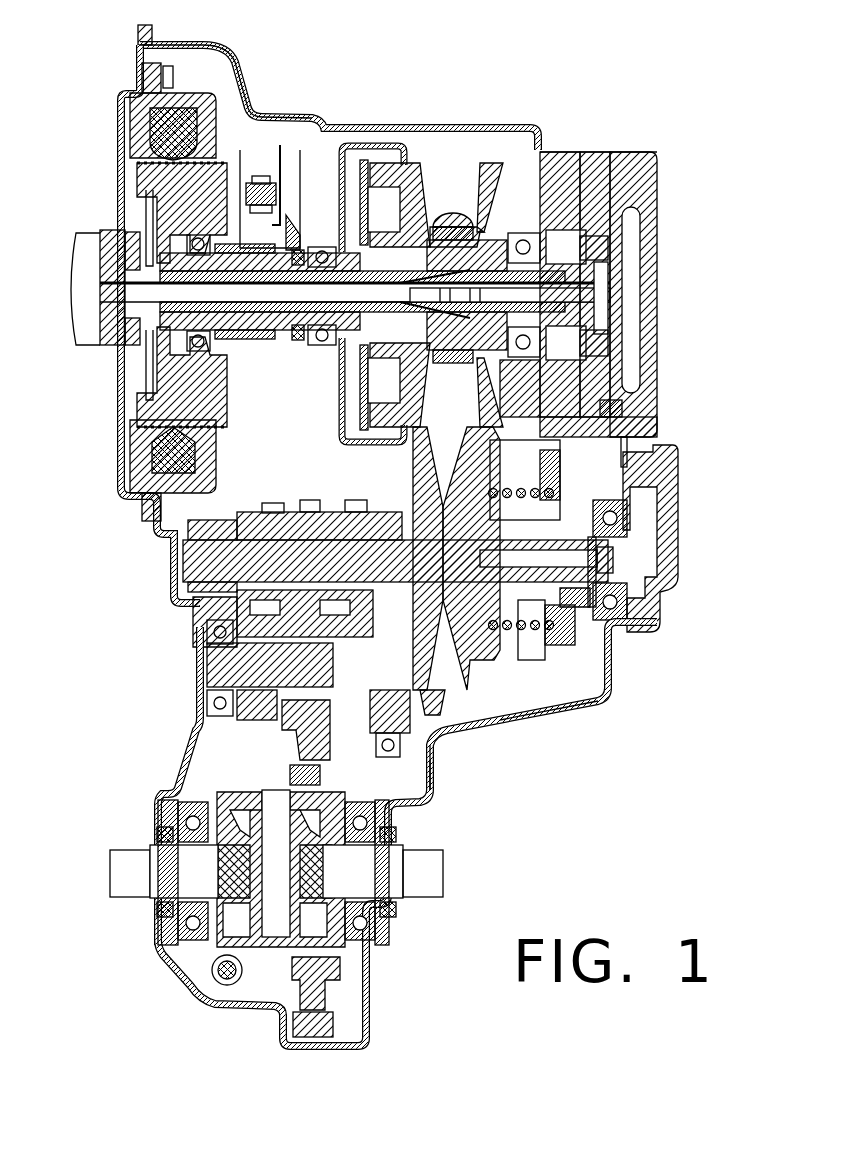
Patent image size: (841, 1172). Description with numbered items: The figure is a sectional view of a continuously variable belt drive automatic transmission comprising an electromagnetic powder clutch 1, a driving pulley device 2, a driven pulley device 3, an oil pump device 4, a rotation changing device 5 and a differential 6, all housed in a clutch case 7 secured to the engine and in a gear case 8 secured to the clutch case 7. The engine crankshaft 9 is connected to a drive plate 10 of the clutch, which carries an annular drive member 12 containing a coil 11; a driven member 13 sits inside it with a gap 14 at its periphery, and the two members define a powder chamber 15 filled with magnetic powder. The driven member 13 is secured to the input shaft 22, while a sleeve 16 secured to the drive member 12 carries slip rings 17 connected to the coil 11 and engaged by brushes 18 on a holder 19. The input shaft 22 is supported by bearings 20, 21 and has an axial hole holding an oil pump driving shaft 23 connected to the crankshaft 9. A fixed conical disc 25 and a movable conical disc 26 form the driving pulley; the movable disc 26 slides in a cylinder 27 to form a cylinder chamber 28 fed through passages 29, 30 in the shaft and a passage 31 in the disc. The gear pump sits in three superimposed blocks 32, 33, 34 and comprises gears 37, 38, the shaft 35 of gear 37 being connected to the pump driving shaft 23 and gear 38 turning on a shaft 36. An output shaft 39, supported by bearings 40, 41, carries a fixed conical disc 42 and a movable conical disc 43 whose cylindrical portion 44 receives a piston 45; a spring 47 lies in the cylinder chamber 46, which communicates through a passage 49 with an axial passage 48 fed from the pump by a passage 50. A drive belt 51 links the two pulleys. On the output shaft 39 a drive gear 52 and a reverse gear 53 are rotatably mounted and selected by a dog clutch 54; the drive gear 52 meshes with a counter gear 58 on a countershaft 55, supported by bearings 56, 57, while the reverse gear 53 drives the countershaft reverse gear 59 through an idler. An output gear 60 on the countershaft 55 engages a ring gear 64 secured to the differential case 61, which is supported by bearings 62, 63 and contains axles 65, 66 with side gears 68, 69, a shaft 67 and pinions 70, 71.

The electromagnetic powder clutch 1 is at (110, 100).
The driving pulley device 2 is at (496, 121).
The driven pulley device 3 is at (468, 768).
The oil pump device 4 is at (672, 268).
The rotation changing device 5 is at (152, 557).
The differential 6 is at (170, 774).
The clutch case 7 is at (235, 100).
The gear case 8 is at (602, 704).
The crankshaft 9 is at (80, 242).
The drive plate 10 is at (118, 122).
The coil 11 is at (205, 110).
The annular drive member 12 is at (172, 88).
The driven member 13 is at (148, 212).
The gap 14 is at (137, 166).
The powder chamber 15 is at (140, 177).
The sleeve 16 is at (238, 245).
The slip rings 17 is at (293, 250).
The brushes 18 is at (284, 215).
The holder 19 is at (268, 218).
The bearing 20 is at (300, 334).
The bearing 21 is at (508, 372).
The input shaft 22 is at (280, 340).
The oil pump driving shaft 23 is at (245, 336).
The fixed conical disc 25 is at (492, 160).
The movable conical disc 26 is at (410, 205).
The cylinder 27 is at (343, 146).
The cylinder chamber 28 is at (400, 160).
The passage 29 is at (453, 295).
The passage 30 is at (418, 230).
The passage 31 is at (383, 295).
The block 32 is at (560, 165).
The block 33 is at (605, 165).
The block 34 is at (645, 165).
The shaft 35 is at (610, 296).
The shaft 36 is at (608, 358).
The gear 37 is at (608, 252).
The gear 38 is at (622, 410).
The output shaft 39 is at (575, 607).
The bearing 40 is at (192, 605).
The bearing 41 is at (640, 612).
The fixed conical disc 42 is at (412, 460).
The movable conical disc 43 is at (470, 732).
The cylindrical portion 44 is at (512, 724).
The piston 45 is at (560, 645).
The cylinder chamber 46 is at (535, 660).
The spring 47 is at (555, 495).
The axial passage 48 is at (613, 558).
The passage 49 is at (478, 520).
The passage 50 is at (665, 510).
The drive belt 51 is at (455, 224).
The drive gear 52 is at (350, 508).
The reverse gear 53 is at (272, 508).
The dog clutch 54 is at (310, 500).
The countershaft 55 is at (215, 660).
The bearing 56 is at (200, 722).
The bearing 57 is at (433, 703).
The counter gear 58 is at (390, 757).
The countershaft reverse gear 59 is at (250, 722).
The output gear 60 is at (300, 722).
The differential case 61 is at (212, 972).
The bearing 62 is at (170, 935).
The bearing 63 is at (385, 940).
The ring gear 64 is at (335, 1026).
The axle 65 is at (150, 898).
The axle 66 is at (415, 898).
The shaft 67 is at (296, 982).
The differential side gear 68 is at (230, 870).
The differential side gear 69 is at (335, 870).
The pinion 70 is at (283, 800).
The pinion 71 is at (274, 950).